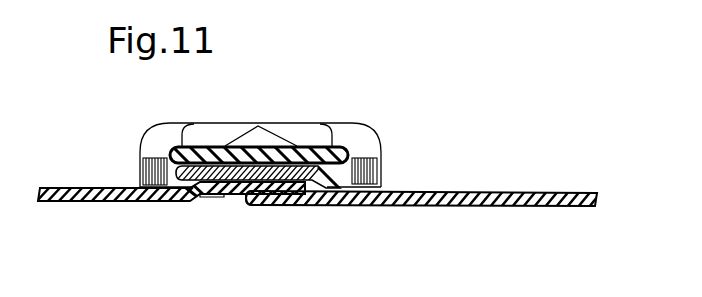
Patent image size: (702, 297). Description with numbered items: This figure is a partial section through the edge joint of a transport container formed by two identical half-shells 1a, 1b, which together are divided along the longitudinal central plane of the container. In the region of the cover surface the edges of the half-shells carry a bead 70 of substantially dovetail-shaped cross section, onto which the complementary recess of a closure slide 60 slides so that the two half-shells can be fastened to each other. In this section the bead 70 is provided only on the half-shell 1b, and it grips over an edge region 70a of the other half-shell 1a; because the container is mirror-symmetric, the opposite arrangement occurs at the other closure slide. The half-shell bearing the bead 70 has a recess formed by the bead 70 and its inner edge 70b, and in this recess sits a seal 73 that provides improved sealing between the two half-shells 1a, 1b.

The half-shell 1a is at (62, 188).
The half-shell 1b is at (532, 192).
The closure slide 60 is at (351, 127).
The bead 70 is at (289, 148).
The edge region 70a is at (223, 198).
The inner edge 70b is at (286, 204).
The seal 73 is at (247, 201).